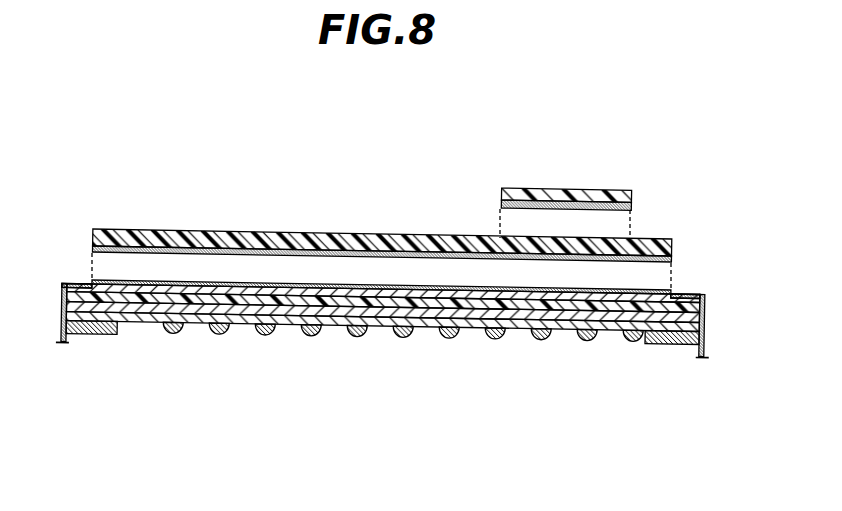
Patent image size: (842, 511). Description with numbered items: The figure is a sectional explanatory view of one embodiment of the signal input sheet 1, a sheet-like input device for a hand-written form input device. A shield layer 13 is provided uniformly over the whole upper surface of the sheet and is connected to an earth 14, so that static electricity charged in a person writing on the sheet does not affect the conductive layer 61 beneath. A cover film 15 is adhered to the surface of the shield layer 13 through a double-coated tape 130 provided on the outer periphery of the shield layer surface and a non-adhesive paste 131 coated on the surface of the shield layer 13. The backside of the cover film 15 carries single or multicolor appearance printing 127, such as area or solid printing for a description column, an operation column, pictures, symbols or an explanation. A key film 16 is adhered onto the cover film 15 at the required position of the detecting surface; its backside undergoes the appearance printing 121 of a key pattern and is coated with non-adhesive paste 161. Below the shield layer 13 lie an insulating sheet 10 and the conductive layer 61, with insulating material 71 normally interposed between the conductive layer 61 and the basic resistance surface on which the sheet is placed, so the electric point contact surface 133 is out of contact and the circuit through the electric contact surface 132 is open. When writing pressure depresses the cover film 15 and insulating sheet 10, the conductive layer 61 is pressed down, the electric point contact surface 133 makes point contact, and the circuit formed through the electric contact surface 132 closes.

The signal input sheet 1 is at (276, 224).
The insulating sheet 10 is at (135, 312).
The shield layer 13 is at (245, 298).
The earth 14 is at (62, 303).
The cover film 15 is at (372, 238).
The key film 16 is at (570, 181).
The conductive layer 61 is at (152, 323).
The insulating material 71 is at (184, 328).
The appearance printing of key pattern 121 is at (528, 189).
The appearance printing 127 is at (216, 251).
The double-coated tape 130 is at (123, 282).
The non-adhesive paste 131 is at (418, 283).
The electric contact surface 132 is at (535, 368).
The electric point contact surface 133 is at (382, 366).
The non-adhesive paste 161 is at (598, 203).